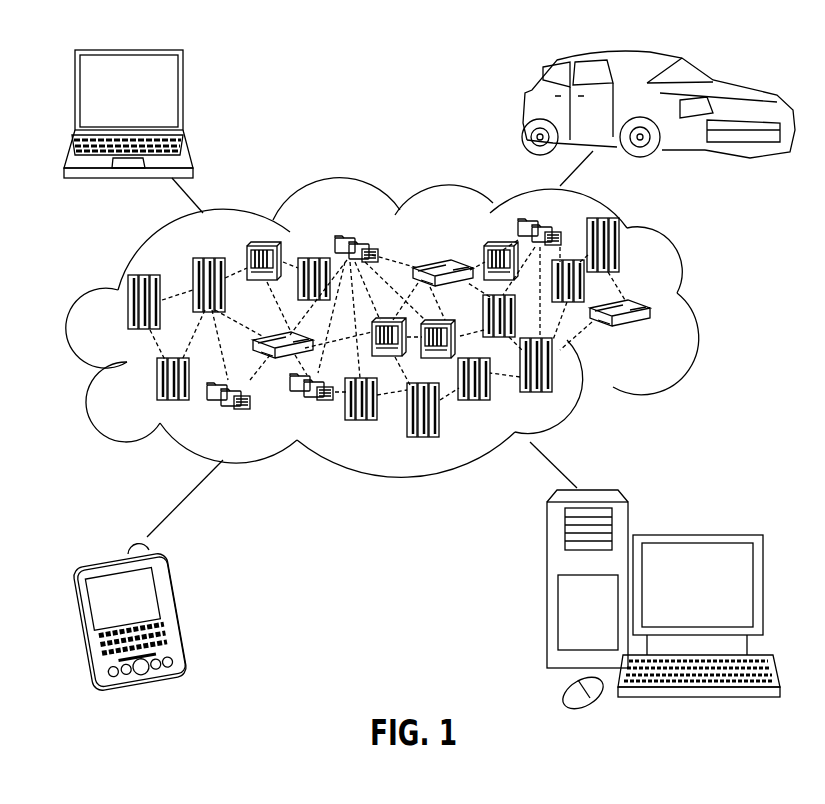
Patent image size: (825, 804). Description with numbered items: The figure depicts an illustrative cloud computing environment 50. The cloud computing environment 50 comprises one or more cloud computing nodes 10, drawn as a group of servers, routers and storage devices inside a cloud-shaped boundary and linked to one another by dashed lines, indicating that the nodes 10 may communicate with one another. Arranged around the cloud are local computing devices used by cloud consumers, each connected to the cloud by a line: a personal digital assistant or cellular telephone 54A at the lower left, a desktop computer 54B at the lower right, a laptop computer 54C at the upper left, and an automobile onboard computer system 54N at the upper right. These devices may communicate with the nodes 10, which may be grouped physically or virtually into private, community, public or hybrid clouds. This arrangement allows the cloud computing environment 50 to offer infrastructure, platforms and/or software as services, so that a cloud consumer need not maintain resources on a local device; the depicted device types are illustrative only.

The cloud computing nodes 10 is at (660, 337).
The cloud computing environment 50 is at (690, 310).
The personal digital assistant or cellular telephone 54A is at (172, 607).
The desktop computer 54B is at (697, 533).
The laptop computer 54C is at (183, 98).
The automobile onboard computer system 54N is at (523, 110).